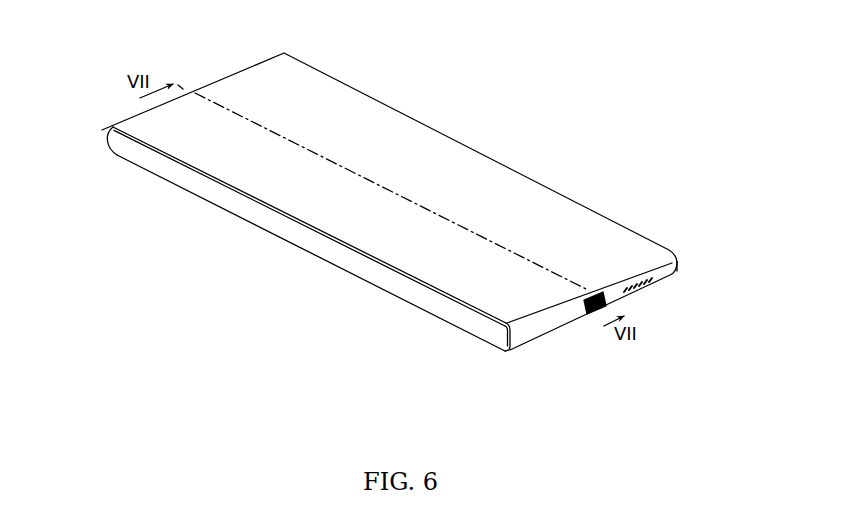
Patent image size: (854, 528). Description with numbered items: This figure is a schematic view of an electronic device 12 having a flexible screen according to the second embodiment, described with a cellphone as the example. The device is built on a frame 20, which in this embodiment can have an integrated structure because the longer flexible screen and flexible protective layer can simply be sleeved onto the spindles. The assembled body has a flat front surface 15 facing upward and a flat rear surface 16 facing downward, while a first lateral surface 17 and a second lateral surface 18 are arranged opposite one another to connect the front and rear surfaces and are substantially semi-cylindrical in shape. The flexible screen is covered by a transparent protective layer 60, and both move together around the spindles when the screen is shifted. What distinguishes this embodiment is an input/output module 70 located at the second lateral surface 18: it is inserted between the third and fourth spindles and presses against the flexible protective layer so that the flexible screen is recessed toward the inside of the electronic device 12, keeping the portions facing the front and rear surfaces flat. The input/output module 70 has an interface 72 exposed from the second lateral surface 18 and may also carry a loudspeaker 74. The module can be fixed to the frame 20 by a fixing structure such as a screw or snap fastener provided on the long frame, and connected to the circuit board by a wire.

The electronic device 12 is at (402, 222).
The front surface 15 is at (546, 217).
The rear surface 16 is at (371, 287).
The first lateral surface 17 is at (99, 131).
The second lateral surface 18 is at (680, 272).
The frame 20 is at (277, 213).
The transparent protective layer 60 is at (441, 181).
The input/output module 70 is at (540, 328).
The interface 72 is at (588, 309).
The loudspeaker 74 is at (651, 291).